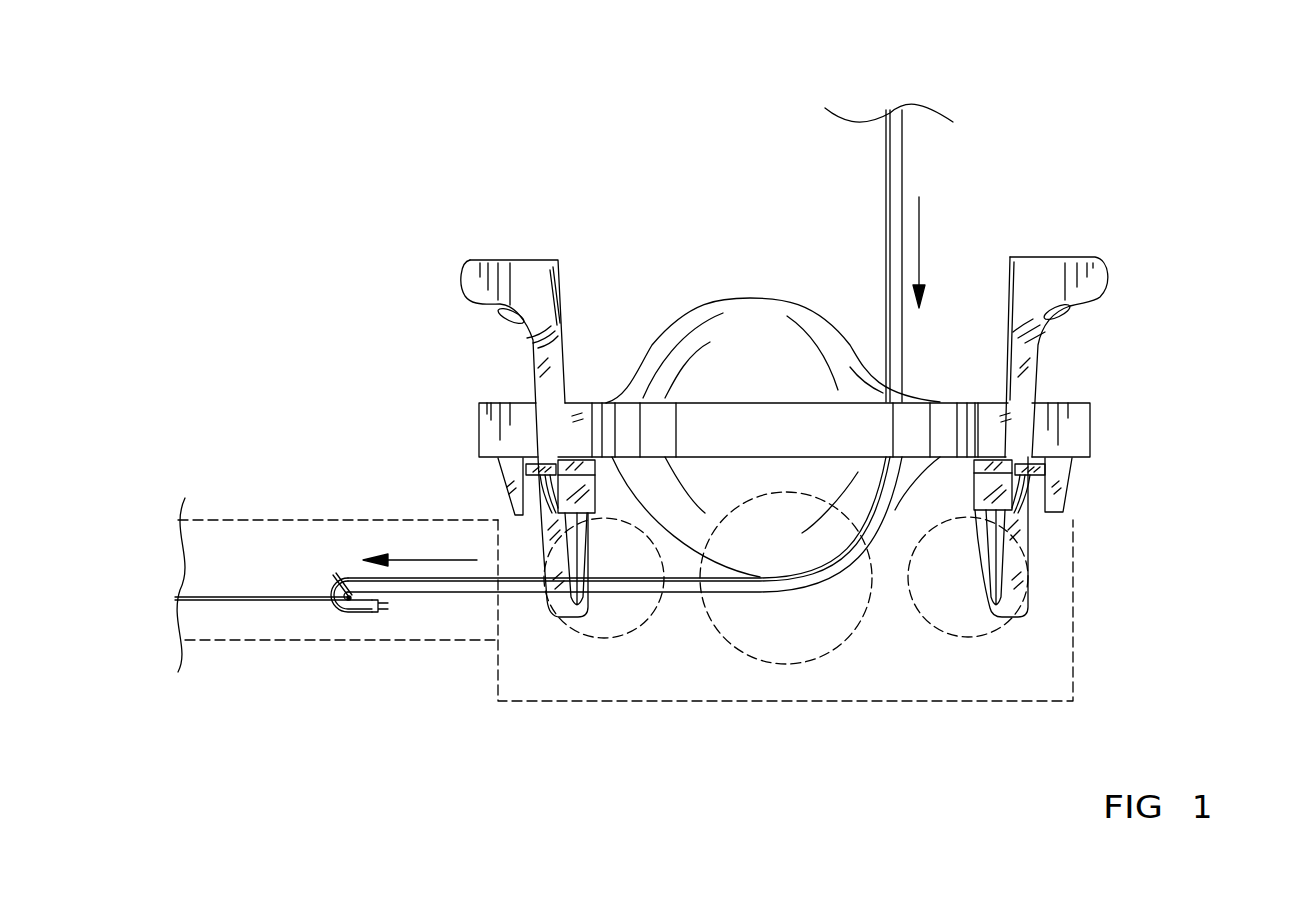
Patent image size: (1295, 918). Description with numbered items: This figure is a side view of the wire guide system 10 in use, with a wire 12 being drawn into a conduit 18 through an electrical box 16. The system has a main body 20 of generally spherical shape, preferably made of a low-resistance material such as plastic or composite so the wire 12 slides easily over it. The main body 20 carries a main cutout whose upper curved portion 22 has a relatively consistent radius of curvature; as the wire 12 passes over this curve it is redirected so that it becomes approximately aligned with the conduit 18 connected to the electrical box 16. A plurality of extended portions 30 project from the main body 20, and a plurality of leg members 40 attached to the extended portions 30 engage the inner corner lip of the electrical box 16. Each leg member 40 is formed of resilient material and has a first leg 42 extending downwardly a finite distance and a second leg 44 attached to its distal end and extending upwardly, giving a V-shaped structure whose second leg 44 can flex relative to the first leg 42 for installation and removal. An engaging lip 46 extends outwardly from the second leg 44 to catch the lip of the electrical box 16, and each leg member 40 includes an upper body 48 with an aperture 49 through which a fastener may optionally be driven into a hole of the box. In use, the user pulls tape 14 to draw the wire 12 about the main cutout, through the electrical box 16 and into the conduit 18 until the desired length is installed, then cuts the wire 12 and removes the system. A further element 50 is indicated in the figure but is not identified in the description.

The wire guide system 10 is at (378, 170).
The wire 12 is at (887, 172).
The tape 14 is at (315, 598).
The electrical box 16 is at (680, 700).
The conduit 18 is at (280, 520).
The main body 20 is at (688, 312).
The upper curved portion 22 is at (840, 325).
The extended portion 30 is at (511, 413).
The leg member 40 is at (1032, 252).
The first leg 42 is at (1000, 561).
The second leg 44 is at (1000, 561).
The engaging lip 46 is at (1043, 463).
The upper body 48 is at (1085, 298).
The aperture 49 is at (1062, 318).
The pivot region 50 is at (985, 518).